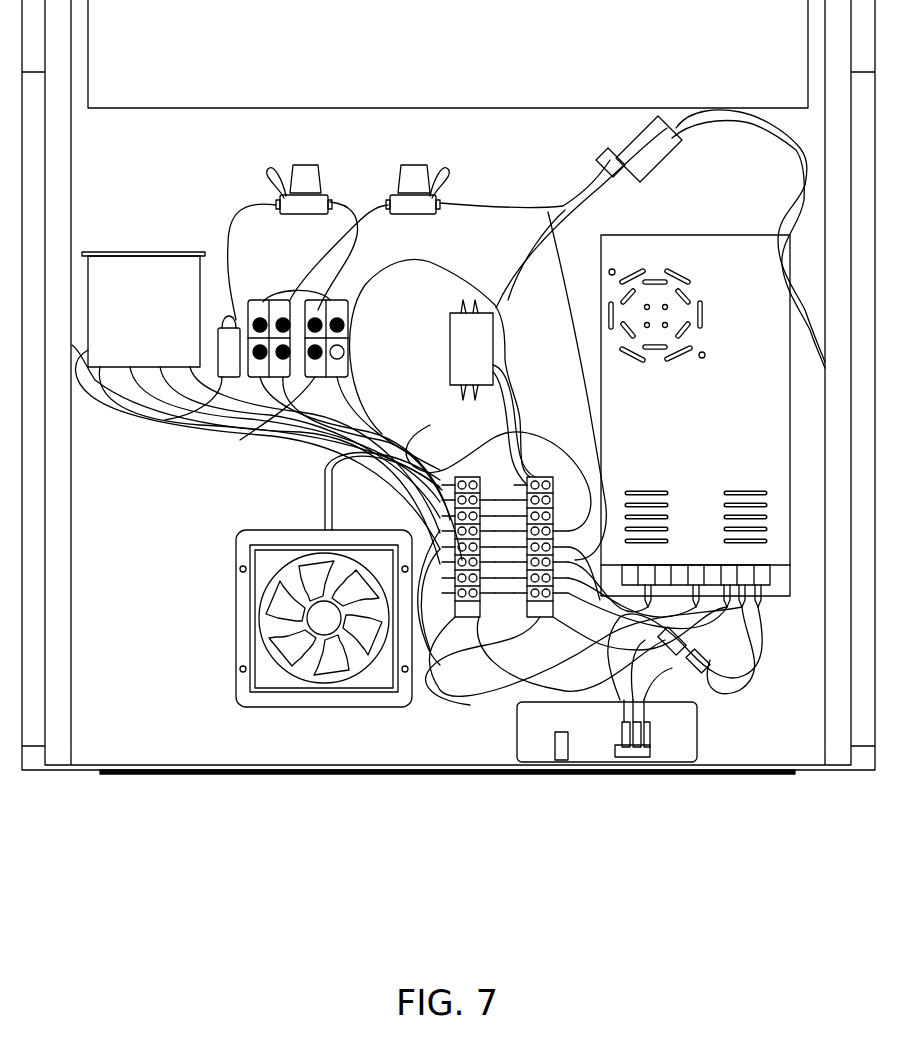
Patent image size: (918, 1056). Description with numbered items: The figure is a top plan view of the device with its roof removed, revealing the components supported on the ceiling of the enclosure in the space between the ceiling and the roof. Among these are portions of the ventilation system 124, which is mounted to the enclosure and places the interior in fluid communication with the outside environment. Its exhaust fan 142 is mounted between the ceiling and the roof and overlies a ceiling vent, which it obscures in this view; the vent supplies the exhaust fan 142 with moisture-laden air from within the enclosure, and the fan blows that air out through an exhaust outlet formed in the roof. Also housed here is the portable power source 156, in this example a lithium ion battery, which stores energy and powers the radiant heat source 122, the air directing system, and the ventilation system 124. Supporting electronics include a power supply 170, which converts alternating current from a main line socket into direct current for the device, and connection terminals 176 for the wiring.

The radiant heat source 122 is at (133, 270).
The ventilation system 124 is at (495, 206).
The exhaust fan 142 is at (272, 622).
The portable power source 156 is at (457, 344).
The power supply 170 is at (672, 406).
The connection terminals 176 is at (538, 476).